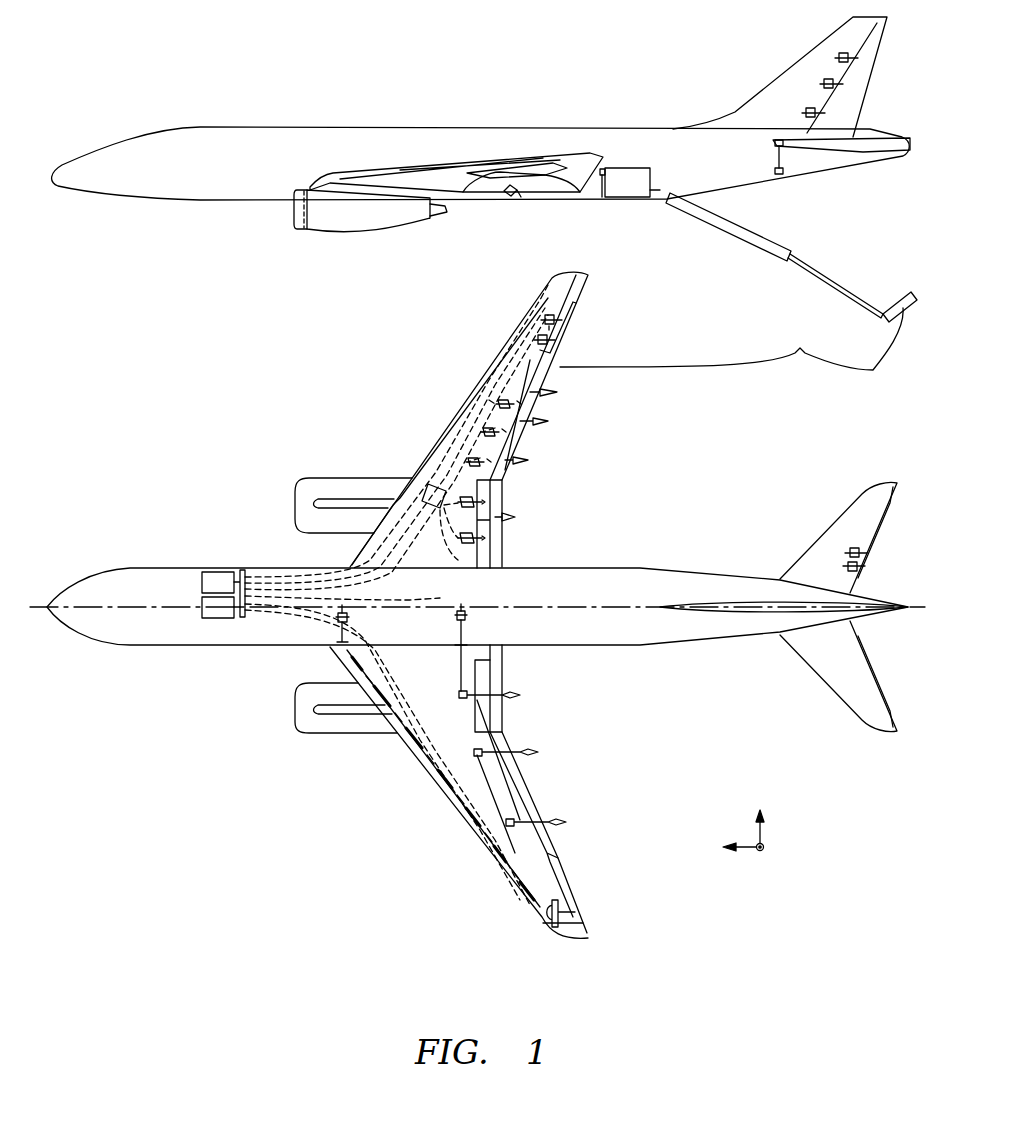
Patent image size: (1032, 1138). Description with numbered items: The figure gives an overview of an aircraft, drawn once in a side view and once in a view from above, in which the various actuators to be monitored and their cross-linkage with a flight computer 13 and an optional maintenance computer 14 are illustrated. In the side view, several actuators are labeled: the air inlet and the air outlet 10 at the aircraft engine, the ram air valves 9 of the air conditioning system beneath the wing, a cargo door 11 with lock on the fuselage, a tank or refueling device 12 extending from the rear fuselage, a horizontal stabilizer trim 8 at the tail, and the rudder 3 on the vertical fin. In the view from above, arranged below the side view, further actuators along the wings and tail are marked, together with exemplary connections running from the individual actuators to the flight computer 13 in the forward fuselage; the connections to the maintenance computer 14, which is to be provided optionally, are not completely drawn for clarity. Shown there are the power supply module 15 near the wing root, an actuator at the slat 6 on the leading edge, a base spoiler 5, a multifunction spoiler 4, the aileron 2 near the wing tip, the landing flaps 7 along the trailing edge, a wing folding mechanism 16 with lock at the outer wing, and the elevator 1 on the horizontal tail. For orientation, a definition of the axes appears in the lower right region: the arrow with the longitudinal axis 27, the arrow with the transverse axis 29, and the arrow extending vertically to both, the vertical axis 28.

The elevator 1 is at (880, 525).
The aileron 2 is at (560, 327).
The rudder 3 is at (843, 97).
The multifunction spoiler 4 is at (536, 394).
The base spoiler 5 is at (488, 503).
The slat 6 is at (433, 767).
The landing flaps 7 is at (492, 675).
The horizontal stabilizer trim 8 is at (784, 148).
The ram air valves 9 is at (447, 202).
The air inlet and air outlet 10 is at (310, 210).
The cargo door 11 is at (627, 185).
The tank or refueling device 12 is at (738, 299).
The flight computer 13 is at (218, 572).
The maintenance computer 14 is at (218, 618).
The power supply module 15 is at (428, 490).
The wing folding mechanism 16 is at (577, 918).
The longitudinal axis 27 is at (742, 849).
The vertical axis 28 is at (764, 850).
The transverse axis 29 is at (755, 830).